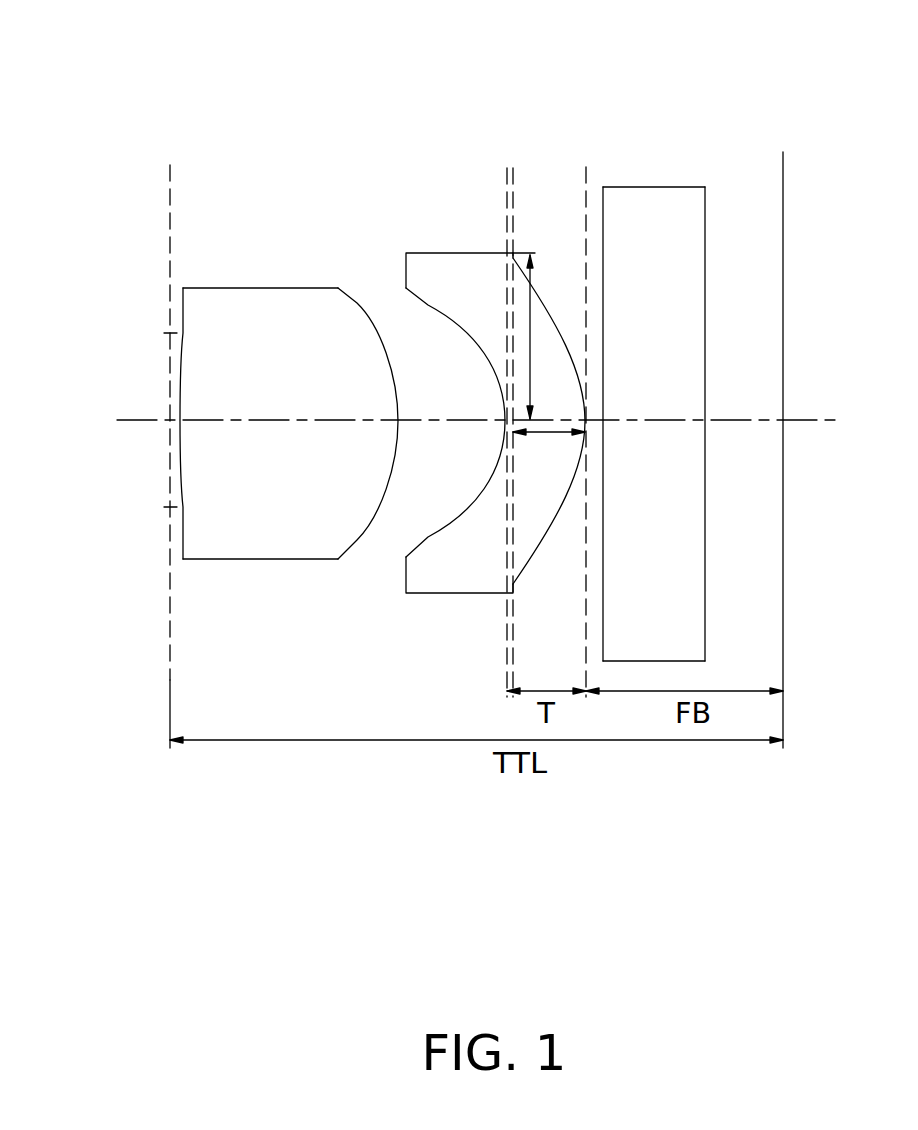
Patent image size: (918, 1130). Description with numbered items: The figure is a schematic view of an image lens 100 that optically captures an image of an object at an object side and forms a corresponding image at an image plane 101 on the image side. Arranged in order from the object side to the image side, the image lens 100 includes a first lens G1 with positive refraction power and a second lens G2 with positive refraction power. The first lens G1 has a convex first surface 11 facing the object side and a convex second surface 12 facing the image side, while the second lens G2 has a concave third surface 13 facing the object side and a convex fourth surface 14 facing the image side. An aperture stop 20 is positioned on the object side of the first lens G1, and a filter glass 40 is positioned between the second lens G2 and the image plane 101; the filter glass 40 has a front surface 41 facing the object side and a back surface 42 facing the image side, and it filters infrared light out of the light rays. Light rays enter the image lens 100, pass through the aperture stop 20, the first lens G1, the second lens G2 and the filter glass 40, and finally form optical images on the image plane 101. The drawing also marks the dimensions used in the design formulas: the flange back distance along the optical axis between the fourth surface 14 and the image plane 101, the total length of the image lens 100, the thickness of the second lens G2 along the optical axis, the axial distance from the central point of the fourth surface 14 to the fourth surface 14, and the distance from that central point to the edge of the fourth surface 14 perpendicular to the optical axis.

The image lens 100 is at (343, 63).
The image plane 101 is at (783, 170).
The first surface 11 is at (180, 465).
The second surface 12 is at (357, 302).
The third surface 13 is at (427, 535).
The fourth surface 14 is at (545, 307).
The aperture stop 20 is at (175, 335).
The filter glass 40 is at (654, 393).
The front surface 41 is at (603, 198).
The back surface 42 is at (705, 217).
The first lens G1 is at (258, 387).
The second lens G2 is at (469, 409).